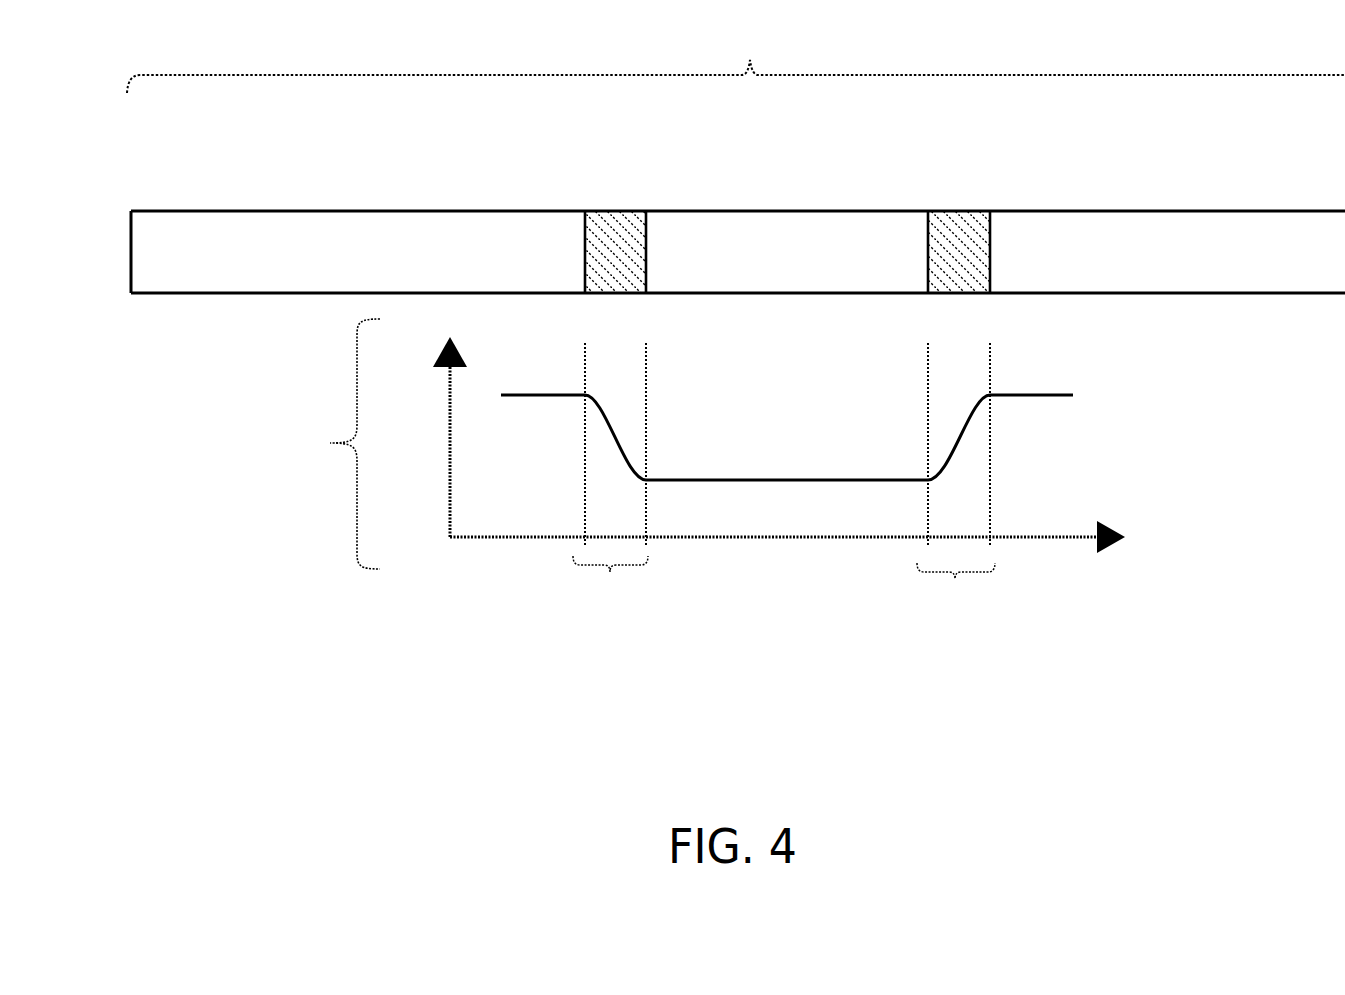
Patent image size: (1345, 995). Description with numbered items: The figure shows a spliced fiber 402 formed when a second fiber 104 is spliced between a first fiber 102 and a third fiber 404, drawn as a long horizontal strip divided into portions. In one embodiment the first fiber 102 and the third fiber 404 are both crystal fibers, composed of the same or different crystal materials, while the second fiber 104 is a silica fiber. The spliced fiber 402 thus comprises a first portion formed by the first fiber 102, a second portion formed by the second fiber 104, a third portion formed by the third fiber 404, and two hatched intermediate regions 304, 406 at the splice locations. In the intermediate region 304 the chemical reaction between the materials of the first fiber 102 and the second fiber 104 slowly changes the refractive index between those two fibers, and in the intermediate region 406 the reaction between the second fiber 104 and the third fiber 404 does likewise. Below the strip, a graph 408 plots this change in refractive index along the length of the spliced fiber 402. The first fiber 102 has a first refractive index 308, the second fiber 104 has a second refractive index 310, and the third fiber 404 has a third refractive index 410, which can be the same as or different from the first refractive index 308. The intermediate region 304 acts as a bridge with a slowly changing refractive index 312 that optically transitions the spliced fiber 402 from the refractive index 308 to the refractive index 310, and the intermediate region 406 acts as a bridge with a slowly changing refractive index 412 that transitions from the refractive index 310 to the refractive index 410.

The first fiber 102 is at (326, 203).
The second fiber 104 is at (829, 200).
The intermediate region 304 is at (618, 198).
The first refractive index 308 is at (567, 407).
The second refractive index 310 is at (706, 473).
The slowly changing refractive index 312 is at (610, 584).
The spliced fiber 402 is at (736, 60).
The third fiber 404 is at (1237, 200).
The intermediate region 406 is at (977, 200).
The graph 408 is at (702, 468).
The third refractive index 410 is at (1032, 415).
The slowly changing refractive index 412 is at (956, 590).